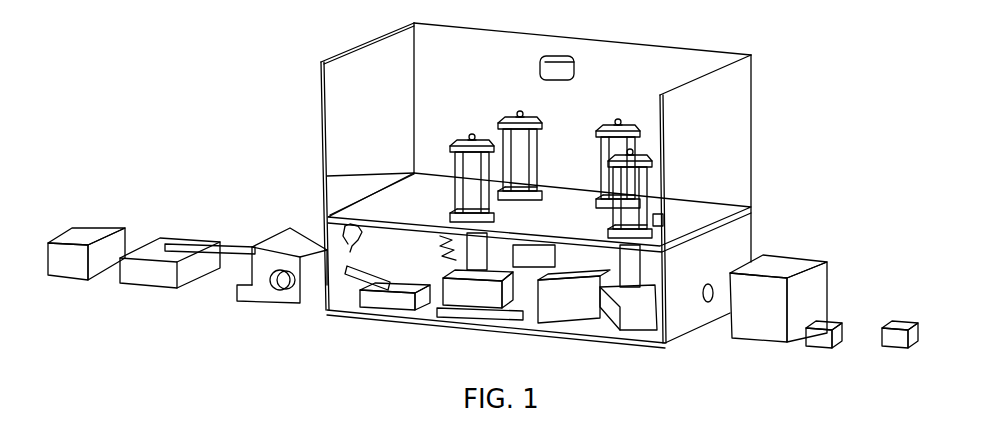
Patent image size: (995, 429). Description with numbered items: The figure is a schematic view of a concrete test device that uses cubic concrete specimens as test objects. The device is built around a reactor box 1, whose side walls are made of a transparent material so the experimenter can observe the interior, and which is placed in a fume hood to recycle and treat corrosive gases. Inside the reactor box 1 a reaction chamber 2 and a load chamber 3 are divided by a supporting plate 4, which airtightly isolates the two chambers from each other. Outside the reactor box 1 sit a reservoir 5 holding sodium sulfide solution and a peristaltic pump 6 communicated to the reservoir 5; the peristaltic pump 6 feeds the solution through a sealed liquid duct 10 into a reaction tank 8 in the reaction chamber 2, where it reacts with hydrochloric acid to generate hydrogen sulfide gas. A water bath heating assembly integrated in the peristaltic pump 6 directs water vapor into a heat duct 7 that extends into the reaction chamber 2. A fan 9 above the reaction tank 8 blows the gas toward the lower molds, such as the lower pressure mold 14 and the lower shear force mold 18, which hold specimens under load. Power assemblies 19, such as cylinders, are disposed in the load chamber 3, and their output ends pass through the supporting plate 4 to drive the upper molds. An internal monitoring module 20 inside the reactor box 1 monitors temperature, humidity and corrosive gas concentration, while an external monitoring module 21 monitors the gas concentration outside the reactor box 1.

The reactor box 1 is at (555, 181).
The reaction chamber 2 is at (531, 183).
The load chamber 3 is at (539, 215).
The supporting plate 4 is at (349, 178).
The reservoir 5 is at (134, 230).
The peristaltic pump 6 is at (282, 235).
The heat duct 7 is at (747, 298).
The reaction tank 8 is at (376, 305).
The fan 9 is at (325, 215).
The liquid duct 10 is at (210, 213).
The lower pressure mold 14 is at (457, 293).
The lower shear force mold 18 is at (578, 305).
The power assembly 19 is at (561, 153).
The internal monitoring module 20 is at (635, 115).
The external monitoring module 21 is at (882, 305).